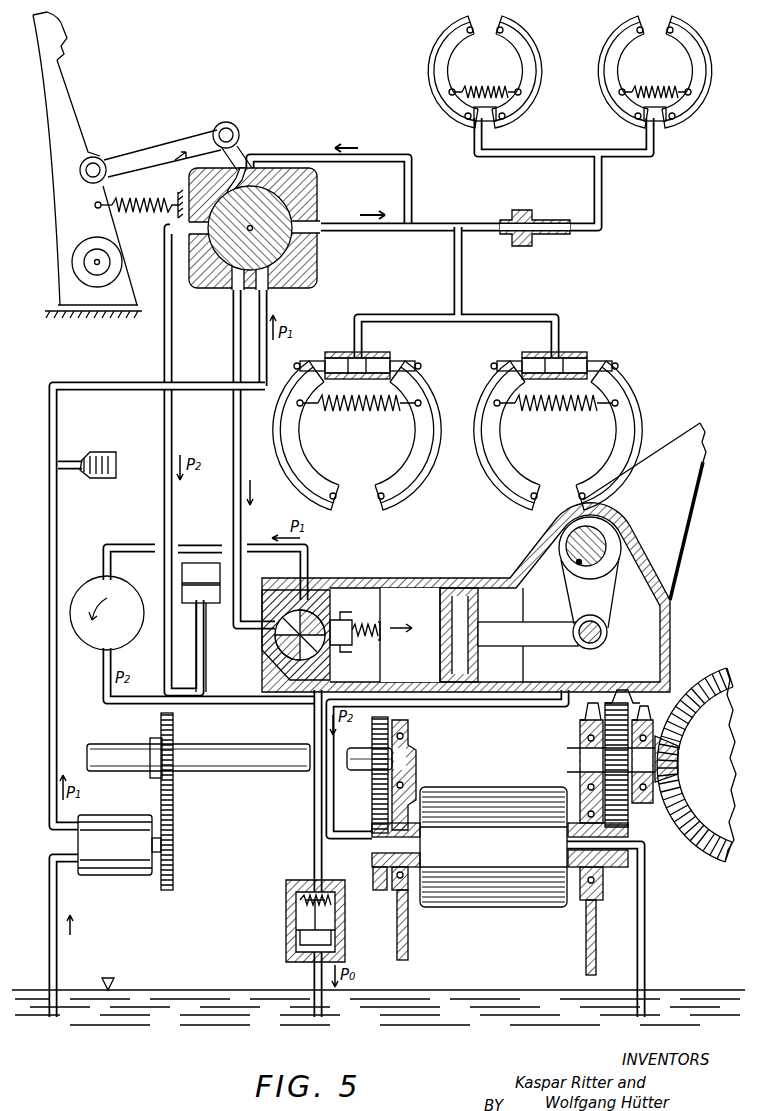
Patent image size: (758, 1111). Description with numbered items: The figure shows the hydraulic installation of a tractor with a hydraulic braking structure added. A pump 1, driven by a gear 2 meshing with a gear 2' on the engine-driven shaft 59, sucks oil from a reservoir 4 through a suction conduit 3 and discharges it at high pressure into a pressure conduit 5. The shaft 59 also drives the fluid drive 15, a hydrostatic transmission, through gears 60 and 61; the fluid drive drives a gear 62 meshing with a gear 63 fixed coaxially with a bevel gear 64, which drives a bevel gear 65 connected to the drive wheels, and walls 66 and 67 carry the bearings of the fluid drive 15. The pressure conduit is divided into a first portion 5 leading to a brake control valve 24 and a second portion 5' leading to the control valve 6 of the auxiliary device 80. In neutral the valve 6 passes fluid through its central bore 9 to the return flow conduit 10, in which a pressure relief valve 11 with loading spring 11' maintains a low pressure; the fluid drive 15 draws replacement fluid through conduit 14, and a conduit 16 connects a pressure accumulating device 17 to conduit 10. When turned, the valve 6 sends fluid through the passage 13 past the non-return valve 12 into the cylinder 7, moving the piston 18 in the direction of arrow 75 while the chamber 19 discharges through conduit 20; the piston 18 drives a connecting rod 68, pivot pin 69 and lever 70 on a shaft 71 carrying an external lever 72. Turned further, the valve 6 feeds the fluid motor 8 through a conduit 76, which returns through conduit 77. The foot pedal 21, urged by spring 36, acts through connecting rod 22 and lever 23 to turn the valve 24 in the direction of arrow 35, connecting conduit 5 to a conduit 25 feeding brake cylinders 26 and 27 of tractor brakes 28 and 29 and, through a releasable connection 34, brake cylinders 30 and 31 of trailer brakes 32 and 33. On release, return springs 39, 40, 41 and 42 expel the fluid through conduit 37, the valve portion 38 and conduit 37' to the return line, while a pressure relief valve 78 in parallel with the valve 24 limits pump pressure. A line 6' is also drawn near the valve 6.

The pump 1 is at (96, 880).
The gear 2 is at (171, 817).
The gear 2' is at (198, 766).
The suction conduit 3 is at (48, 949).
The reservoir 4 is at (160, 1000).
The pressure conduit 5 is at (159, 606).
The pressure conduit portion 5' is at (256, 456).
The control valve 6 is at (294, 637).
The valve connection line 6' is at (291, 571).
The cylinder 7 is at (405, 595).
The fluid motor 8 is at (99, 586).
The central bore 9 is at (274, 652).
The return flow conduit 10 is at (314, 810).
The pressure relief valve 11 is at (308, 905).
The loading spring 11' is at (288, 915).
The non-return valve 12 is at (372, 620).
The passage 13 is at (344, 612).
The conduit 14 is at (342, 837).
The fluid drive 15 is at (484, 900).
The conduit 16 is at (198, 662).
The pressure accumulating device 17 is at (190, 604).
The piston 18 is at (476, 603).
The chamber 19 is at (646, 633).
The conduit 20 is at (466, 703).
The foot pedal 21 is at (62, 38).
The connecting rod 22 is at (157, 146).
The lever 23 is at (241, 136).
The control valve 24 is at (278, 195).
The conduit 25 is at (428, 226).
The brake cylinder 26 is at (357, 360).
The brake cylinder 27 is at (560, 362).
The tractor brake 28 is at (380, 488).
The tractor brake 29 is at (582, 488).
The brake cylinder 30 is at (478, 118).
The brake cylinder 31 is at (660, 128).
The brake 32 is at (515, 54).
The brake 33 is at (685, 54).
The releasable conduit connection 34 is at (548, 238).
The arrow 35 is at (200, 143).
The spring 36 is at (148, 212).
The conduit 37 is at (329, 169).
The conduit 37' is at (162, 460).
The portion of the valve 38 is at (192, 288).
The return spring 39 is at (375, 414).
The return spring 40 is at (578, 410).
The return spring 41 is at (490, 88).
The return spring 42 is at (660, 88).
The shaft 59 is at (350, 762).
The gear 60 is at (372, 737).
The gear 61 is at (384, 890).
The gear 62 is at (630, 878).
The gear 63 is at (620, 703).
The bevel gear 64 is at (672, 762).
The bevel gear 65 is at (688, 816).
The wall 66 is at (410, 949).
The wall 67 is at (585, 945).
The connecting rod 68 is at (482, 644).
The pivot pin 69 is at (582, 640).
The lever 70 is at (612, 600).
The shaft 71 is at (610, 552).
The lever 72 is at (680, 486).
The arrow 75 is at (396, 622).
The conduit 76 is at (125, 546).
The conduit 77 is at (228, 702).
The pressure relief valve 78 is at (88, 452).
The auxiliary device 80 is at (485, 571).